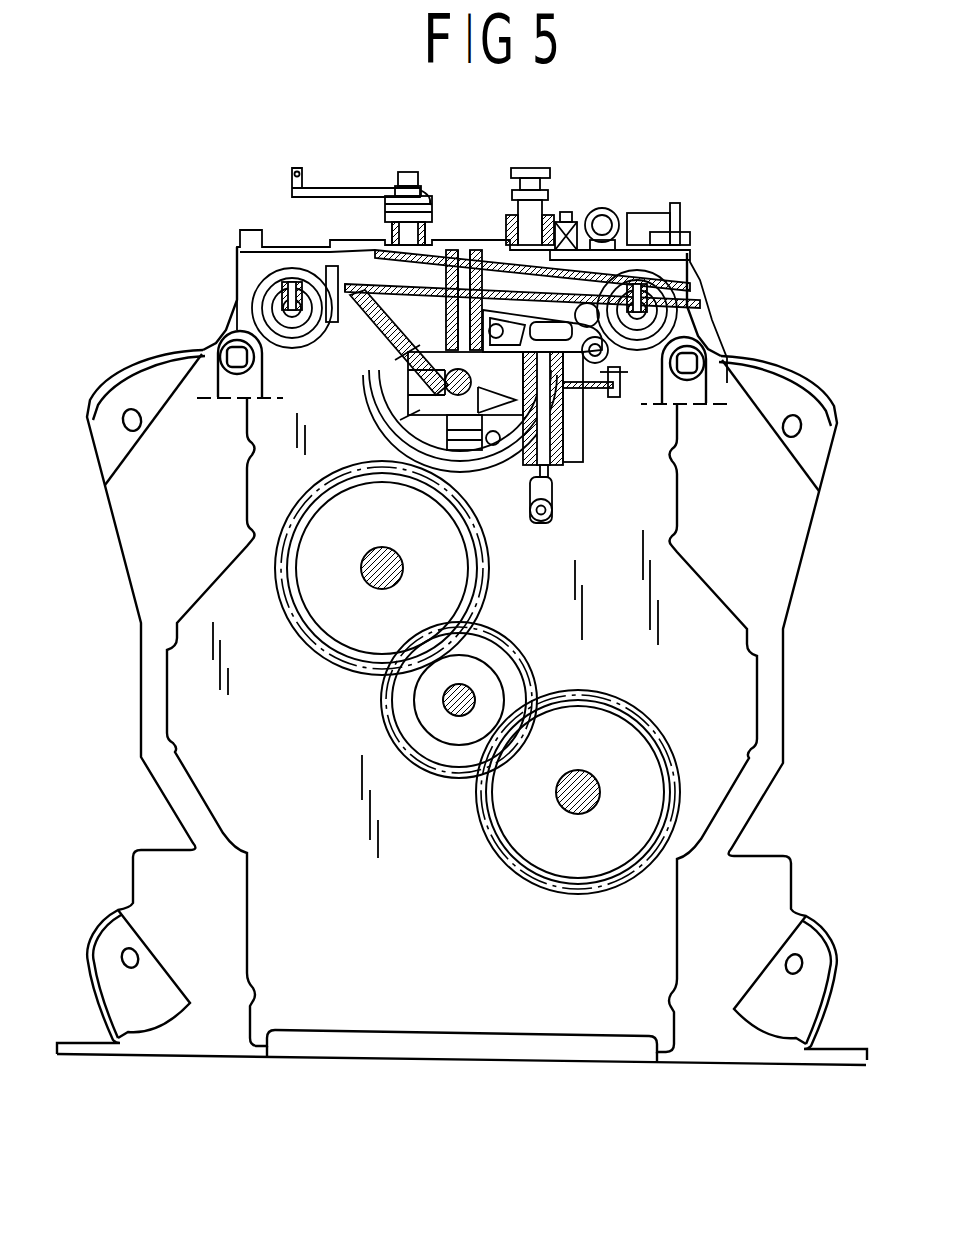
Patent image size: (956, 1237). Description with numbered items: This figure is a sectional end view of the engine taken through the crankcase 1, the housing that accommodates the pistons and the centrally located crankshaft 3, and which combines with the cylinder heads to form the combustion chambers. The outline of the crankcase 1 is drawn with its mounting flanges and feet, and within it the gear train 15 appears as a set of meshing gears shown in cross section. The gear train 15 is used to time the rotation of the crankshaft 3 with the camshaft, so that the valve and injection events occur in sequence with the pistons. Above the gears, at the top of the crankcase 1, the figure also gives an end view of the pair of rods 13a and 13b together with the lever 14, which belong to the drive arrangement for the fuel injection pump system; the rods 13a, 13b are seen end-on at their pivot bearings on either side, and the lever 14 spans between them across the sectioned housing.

The crankcase 1 is at (790, 690).
The crankshaft 3 is at (453, 735).
The rod 13a is at (640, 311).
The rod 13b is at (292, 306).
The lever 14 is at (406, 262).
The gear train 15 is at (342, 679).